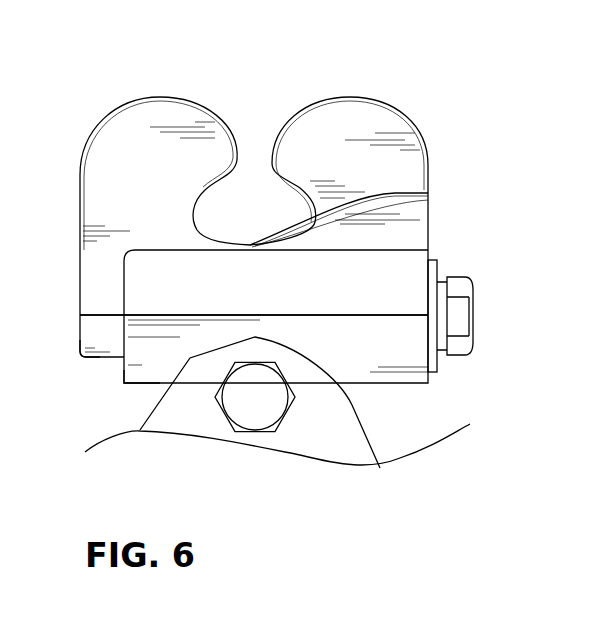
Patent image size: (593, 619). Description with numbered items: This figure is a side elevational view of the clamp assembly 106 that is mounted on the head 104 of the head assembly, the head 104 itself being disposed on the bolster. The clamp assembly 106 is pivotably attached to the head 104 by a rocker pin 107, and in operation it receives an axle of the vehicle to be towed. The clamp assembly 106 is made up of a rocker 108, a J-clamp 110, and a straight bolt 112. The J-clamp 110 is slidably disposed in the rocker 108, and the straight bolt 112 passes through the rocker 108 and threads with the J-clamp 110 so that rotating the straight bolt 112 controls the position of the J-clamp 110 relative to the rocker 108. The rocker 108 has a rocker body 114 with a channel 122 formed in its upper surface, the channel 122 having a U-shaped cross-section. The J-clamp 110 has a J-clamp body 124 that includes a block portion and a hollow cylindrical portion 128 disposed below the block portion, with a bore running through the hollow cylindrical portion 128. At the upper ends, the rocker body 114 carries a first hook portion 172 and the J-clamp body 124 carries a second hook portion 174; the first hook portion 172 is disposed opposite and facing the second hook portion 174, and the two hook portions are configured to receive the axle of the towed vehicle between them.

The head 104 is at (352, 421).
The clamp assembly 106 is at (263, 82).
The rocker pin 107 is at (255, 432).
The rocker 108 is at (404, 207).
The J-clamp 110 is at (117, 313).
The straight bolt 112 is at (465, 316).
The rocker body 114 is at (381, 221).
The channel 122 is at (148, 368).
The J-clamp body 124 is at (73, 264).
The hollow cylindrical portion 128 is at (82, 347).
The first hook portion 172 is at (409, 164).
The second hook portion 174 is at (104, 146).